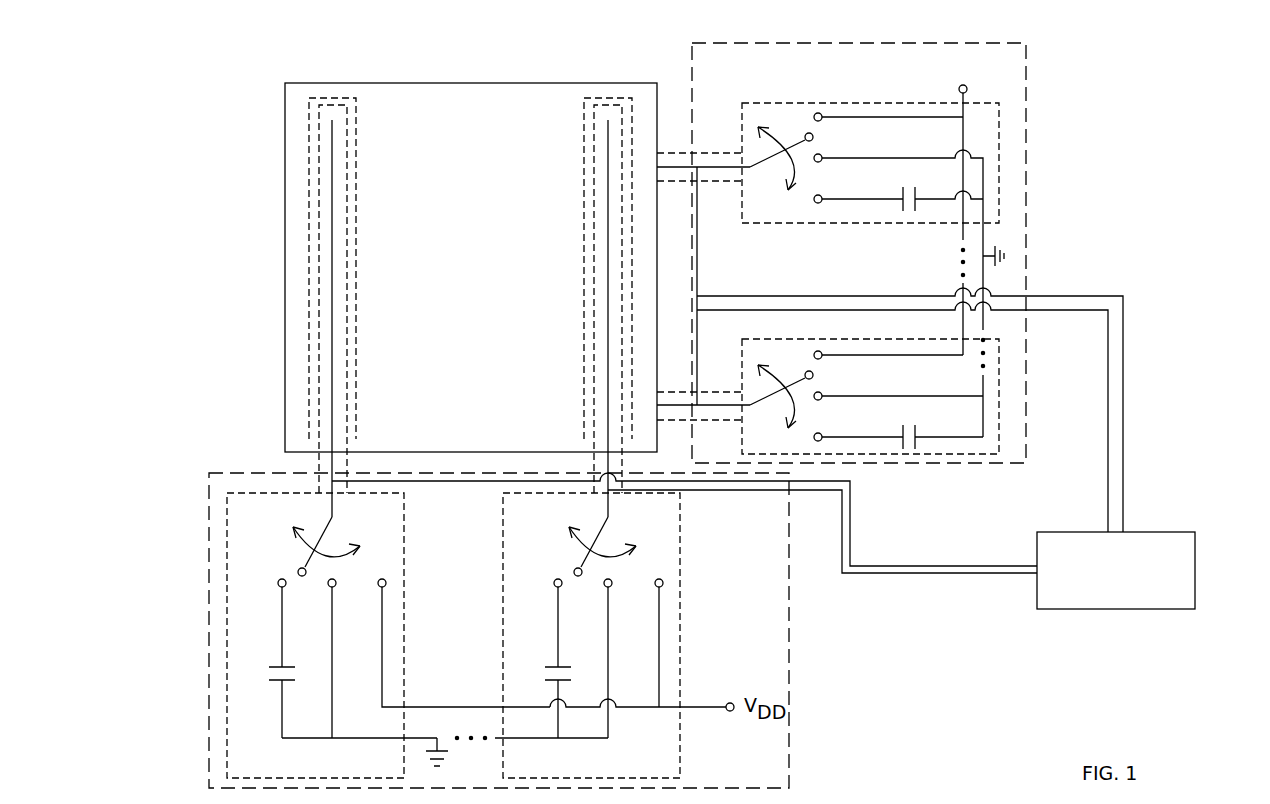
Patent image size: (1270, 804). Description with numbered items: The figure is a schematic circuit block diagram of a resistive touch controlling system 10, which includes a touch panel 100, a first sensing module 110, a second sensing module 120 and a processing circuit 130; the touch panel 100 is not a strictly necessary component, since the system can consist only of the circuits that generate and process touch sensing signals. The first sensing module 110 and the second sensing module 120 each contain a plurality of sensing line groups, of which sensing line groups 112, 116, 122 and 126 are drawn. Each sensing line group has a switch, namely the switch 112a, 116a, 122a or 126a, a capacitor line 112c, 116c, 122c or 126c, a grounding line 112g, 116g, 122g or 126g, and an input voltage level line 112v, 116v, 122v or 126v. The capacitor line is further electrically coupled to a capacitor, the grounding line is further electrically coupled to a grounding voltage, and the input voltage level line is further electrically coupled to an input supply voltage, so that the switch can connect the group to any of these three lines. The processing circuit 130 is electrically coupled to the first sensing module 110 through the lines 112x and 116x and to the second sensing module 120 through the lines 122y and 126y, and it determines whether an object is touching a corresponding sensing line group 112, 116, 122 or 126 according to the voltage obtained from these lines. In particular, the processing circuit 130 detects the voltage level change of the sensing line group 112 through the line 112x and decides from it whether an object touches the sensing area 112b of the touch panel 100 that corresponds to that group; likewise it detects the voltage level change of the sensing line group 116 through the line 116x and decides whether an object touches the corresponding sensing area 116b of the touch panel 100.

The resistive touch controlling system 10 is at (1235, 703).
The touch panel 100 is at (297, 230).
The first sensing module 110 is at (209, 590).
The sensing line group 112 is at (227, 538).
The switch 112a is at (325, 527).
The sensing area 112b is at (309, 135).
The capacitor line 112c is at (280, 605).
The grounding line 112g is at (334, 605).
The input voltage level line 112v is at (384, 611).
The line 112x is at (953, 564).
The sensing line group 116 is at (683, 577).
The switch 116a is at (600, 527).
The sensing area 116b is at (607, 96).
The capacitor line 116c is at (556, 605).
The grounding line 116g is at (610, 605).
The input voltage level line 116v is at (661, 611).
The line 116x is at (918, 577).
The second sensing module 120 is at (1030, 157).
The sensing line group 122 is at (714, 390).
The switch 122a is at (795, 385).
The capacitor line 122c is at (880, 441).
The grounding line 122g is at (858, 392).
The input voltage level line 122v is at (859, 352).
The line 122y is at (1066, 313).
The sensing line group 126 is at (771, 230).
The switch 126a is at (793, 138).
The capacitor line 126c is at (862, 205).
The grounding line 126g is at (848, 156).
The input voltage level line 126v is at (851, 115).
The line 126y is at (1125, 372).
The processing circuit 130 is at (1113, 612).